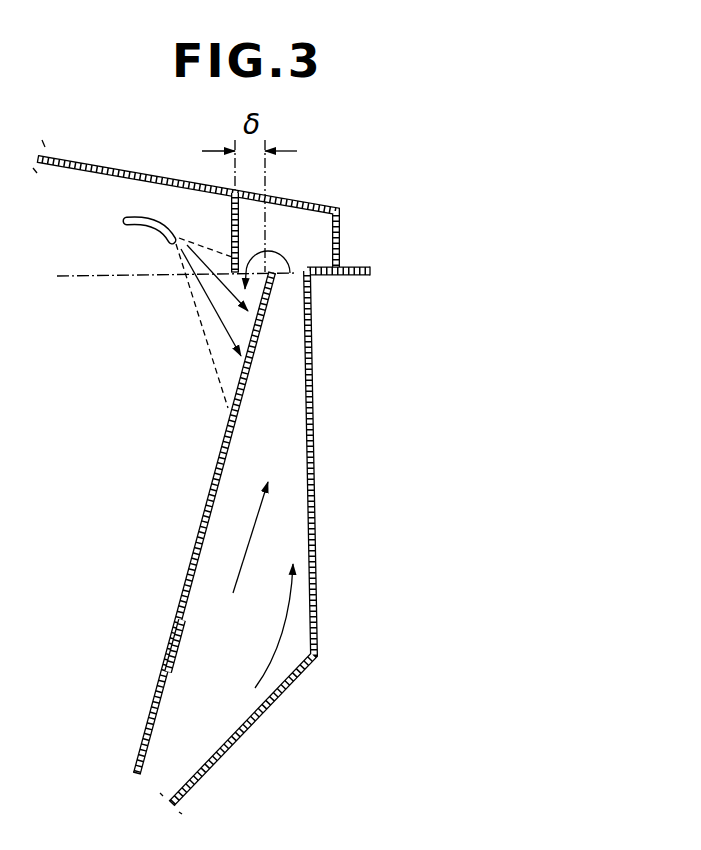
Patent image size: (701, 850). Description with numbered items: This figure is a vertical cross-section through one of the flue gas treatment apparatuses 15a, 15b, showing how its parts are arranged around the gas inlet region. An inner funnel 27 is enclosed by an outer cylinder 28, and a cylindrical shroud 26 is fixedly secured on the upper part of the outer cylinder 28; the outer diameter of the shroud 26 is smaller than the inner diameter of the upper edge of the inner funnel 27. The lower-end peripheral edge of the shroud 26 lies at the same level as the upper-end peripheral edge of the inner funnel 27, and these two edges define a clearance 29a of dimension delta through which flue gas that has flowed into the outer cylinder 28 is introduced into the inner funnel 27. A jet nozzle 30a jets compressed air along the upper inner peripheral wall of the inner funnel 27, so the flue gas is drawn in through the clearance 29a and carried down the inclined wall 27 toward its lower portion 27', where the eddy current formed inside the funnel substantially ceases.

The flue gas treatment apparatus 15a is at (282, 273).
The flue gas treatment apparatus 15b is at (282, 264).
The cylindrical shroud 26 is at (205, 232).
The inner funnel 27 is at (262, 523).
The lower portion of inclined guide wall 27' is at (252, 679).
The outer cylinder 28 is at (280, 538).
The clearance 29a is at (381, 267).
The jet nozzle 30a is at (153, 314).